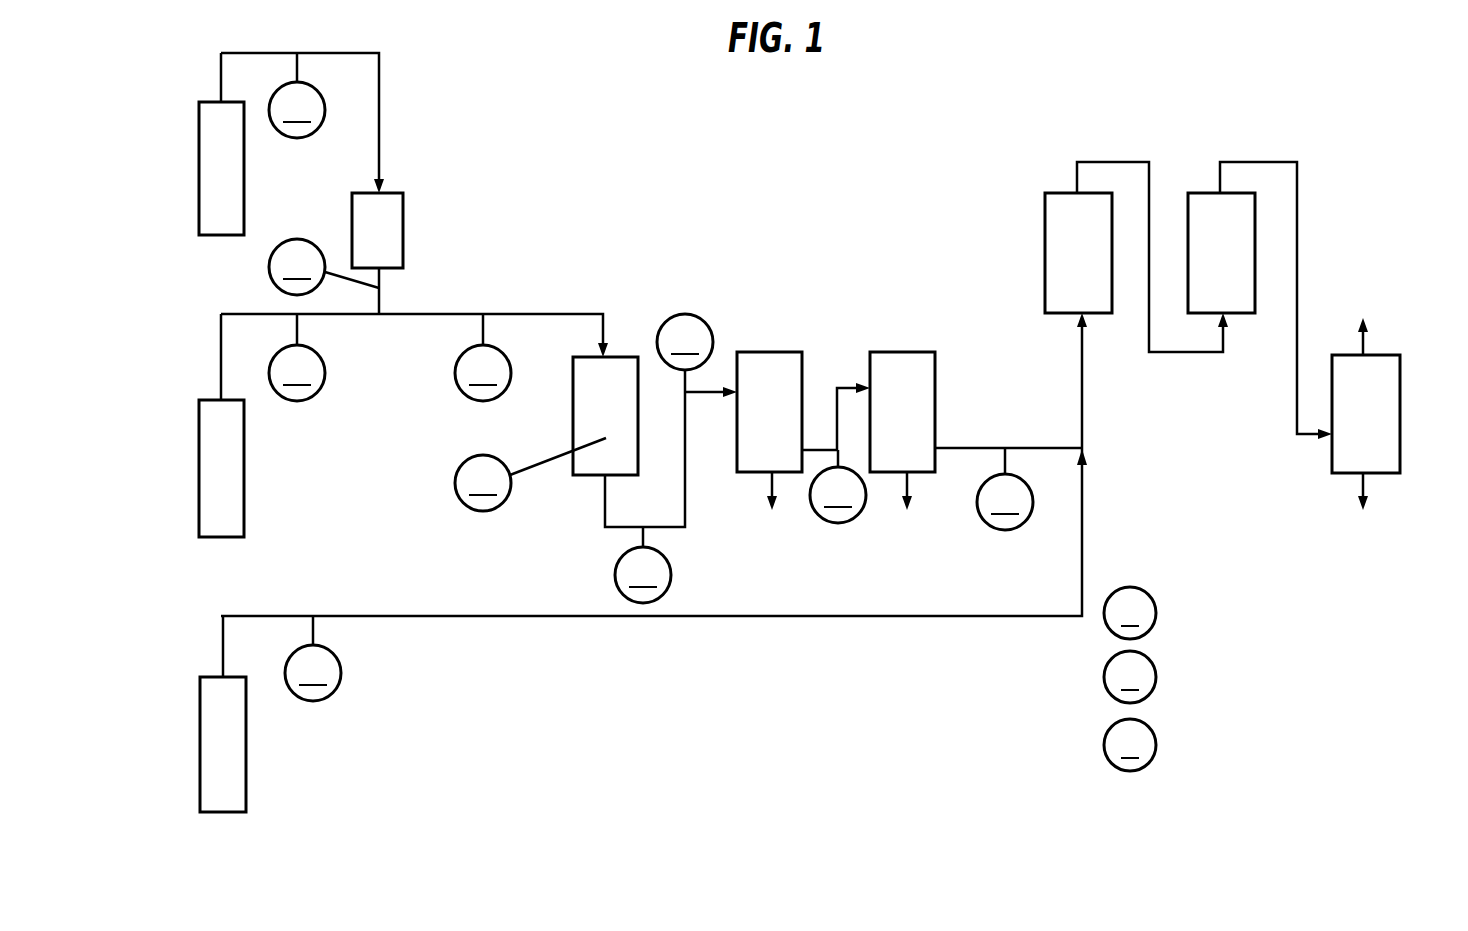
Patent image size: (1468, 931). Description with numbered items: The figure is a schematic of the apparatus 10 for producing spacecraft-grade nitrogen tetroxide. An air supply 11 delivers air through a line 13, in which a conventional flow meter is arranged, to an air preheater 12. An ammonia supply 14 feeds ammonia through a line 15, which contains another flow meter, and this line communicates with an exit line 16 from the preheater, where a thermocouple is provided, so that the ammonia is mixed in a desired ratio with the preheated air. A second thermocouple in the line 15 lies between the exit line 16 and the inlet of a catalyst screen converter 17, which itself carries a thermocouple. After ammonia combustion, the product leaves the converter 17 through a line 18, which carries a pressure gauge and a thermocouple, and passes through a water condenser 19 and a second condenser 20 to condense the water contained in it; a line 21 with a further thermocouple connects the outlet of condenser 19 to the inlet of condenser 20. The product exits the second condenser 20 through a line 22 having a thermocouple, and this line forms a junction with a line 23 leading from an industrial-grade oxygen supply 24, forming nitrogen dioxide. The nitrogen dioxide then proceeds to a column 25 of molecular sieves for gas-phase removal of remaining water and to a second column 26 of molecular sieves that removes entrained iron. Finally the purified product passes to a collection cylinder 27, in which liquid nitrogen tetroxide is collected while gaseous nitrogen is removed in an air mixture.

The apparatus 10 is at (813, 165).
The air supply 11 is at (198, 167).
The air preheater 12 is at (352, 223).
The line 13 is at (379, 88).
The ammonia supply 14 is at (198, 468).
The line 15 is at (421, 316).
The exit line 16 is at (379, 302).
The catalyst screen converter 17 is at (592, 398).
The line 18 is at (685, 513).
The water condenser 19 is at (756, 393).
The second condenser 20 is at (890, 393).
The line 21 is at (837, 413).
The line 22 is at (968, 445).
The line 23 is at (490, 618).
The industrial-grade oxygen supply 24 is at (200, 743).
The column of molecular sieves 25 is at (1066, 236).
The second column of molecular sieves 26 is at (1209, 236).
The collection cylinder 27 is at (1353, 395).